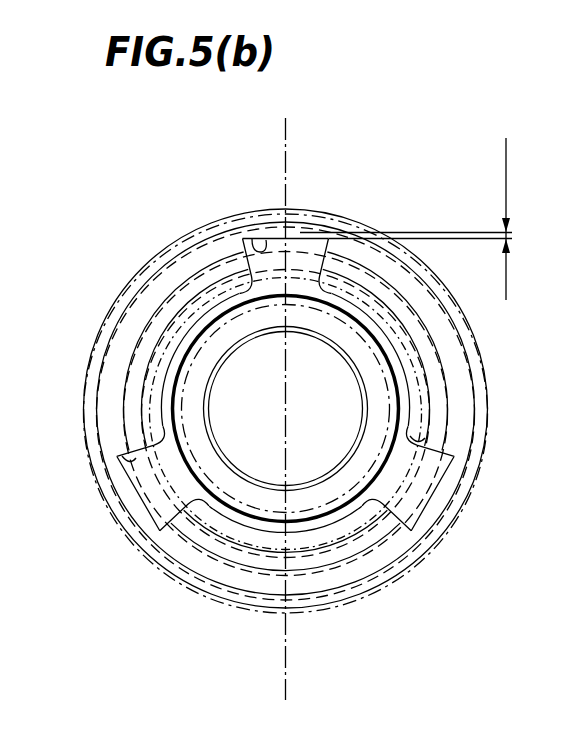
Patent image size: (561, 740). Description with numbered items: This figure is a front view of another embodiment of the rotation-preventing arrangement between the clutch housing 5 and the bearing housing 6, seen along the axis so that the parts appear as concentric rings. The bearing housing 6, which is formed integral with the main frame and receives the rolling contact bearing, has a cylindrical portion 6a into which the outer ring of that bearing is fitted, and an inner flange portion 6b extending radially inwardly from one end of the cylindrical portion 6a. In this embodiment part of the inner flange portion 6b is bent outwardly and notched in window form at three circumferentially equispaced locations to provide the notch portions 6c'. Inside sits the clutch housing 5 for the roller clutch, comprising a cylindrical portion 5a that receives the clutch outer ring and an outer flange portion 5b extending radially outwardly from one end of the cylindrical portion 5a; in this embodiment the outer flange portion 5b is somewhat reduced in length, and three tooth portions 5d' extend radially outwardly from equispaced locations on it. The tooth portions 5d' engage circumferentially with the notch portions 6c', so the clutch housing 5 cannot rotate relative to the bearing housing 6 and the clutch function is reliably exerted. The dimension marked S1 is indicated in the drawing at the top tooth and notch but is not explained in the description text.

The clutch housing 5 is at (172, 362).
The cylindrical portion 5a is at (340, 686).
The outer flange portion 5b is at (265, 523).
The tooth portions 5d' is at (300, 232).
The bearing housing 6 is at (122, 291).
The cylindrical portion 6a is at (161, 260).
The inner flange portion 6b is at (209, 252).
The notch portions 6c' is at (237, 211).
The offset clearance S1 is at (423, 219).